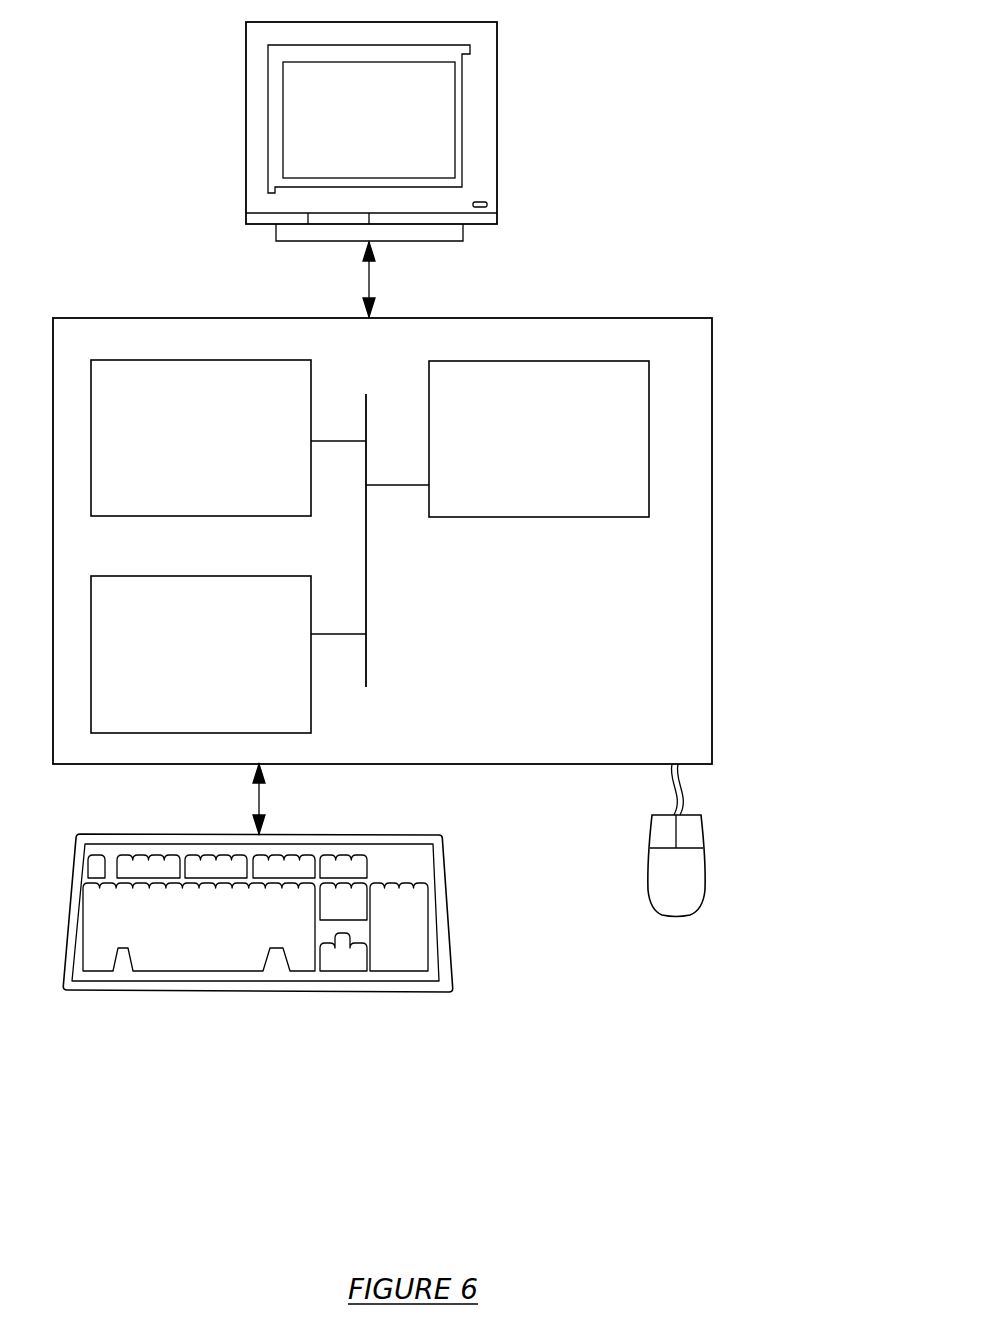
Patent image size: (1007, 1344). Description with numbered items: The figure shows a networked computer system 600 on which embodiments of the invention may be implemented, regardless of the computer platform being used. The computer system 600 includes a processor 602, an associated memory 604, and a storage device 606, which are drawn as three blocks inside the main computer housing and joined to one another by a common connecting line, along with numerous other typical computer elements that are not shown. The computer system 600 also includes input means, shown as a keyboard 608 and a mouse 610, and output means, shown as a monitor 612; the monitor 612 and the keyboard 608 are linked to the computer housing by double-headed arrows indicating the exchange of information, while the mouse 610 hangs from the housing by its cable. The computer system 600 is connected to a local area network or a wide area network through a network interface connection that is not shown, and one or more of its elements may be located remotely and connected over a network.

The networked computer system 600 is at (694, 188).
The processor 602 is at (535, 452).
The memory 604 is at (181, 450).
The storage device 606 is at (178, 668).
The keyboard 608 is at (172, 950).
The mouse 610 is at (655, 888).
The monitor 612 is at (348, 137).